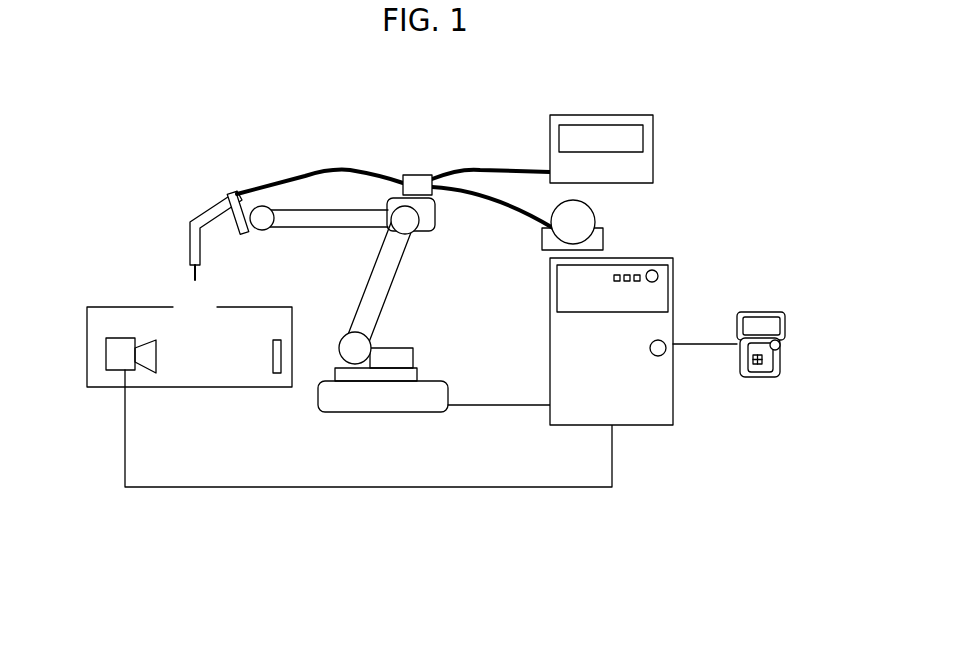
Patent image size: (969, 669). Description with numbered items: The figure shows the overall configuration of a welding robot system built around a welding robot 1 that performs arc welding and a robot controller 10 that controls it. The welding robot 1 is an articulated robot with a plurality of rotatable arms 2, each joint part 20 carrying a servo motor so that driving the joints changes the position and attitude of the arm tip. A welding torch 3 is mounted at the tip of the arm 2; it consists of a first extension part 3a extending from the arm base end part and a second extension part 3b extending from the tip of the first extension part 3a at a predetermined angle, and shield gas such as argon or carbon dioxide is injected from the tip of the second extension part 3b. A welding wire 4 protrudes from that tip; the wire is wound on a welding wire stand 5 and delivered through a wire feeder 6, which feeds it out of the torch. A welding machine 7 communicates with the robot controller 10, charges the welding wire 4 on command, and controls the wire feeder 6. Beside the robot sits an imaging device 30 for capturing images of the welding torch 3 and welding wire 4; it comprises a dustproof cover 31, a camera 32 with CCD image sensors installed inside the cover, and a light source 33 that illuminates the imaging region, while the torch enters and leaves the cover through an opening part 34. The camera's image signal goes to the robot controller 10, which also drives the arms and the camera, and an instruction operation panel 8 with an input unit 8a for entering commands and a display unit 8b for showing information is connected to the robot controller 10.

The welding robot 1 is at (336, 124).
The arm 2 is at (380, 298).
The welding torch 3 is at (200, 212).
The first extension part 3a is at (228, 200).
The second extension part 3b is at (188, 240).
The welding wire 4 is at (191, 275).
The welding wire stand 5 is at (598, 208).
The wire feeder 6 is at (420, 175).
The welding machine 7 is at (657, 140).
The instruction operation panel 8 is at (783, 312).
The input unit 8a is at (763, 370).
The display unit 8b is at (752, 325).
The robot controller 10 is at (660, 425).
The joint part 20 is at (263, 225).
The imaging device 30 is at (86, 283).
The dustproof cover 31 is at (202, 388).
The camera 32 is at (113, 373).
The light source 33 is at (277, 375).
The opening part 34 is at (196, 308).